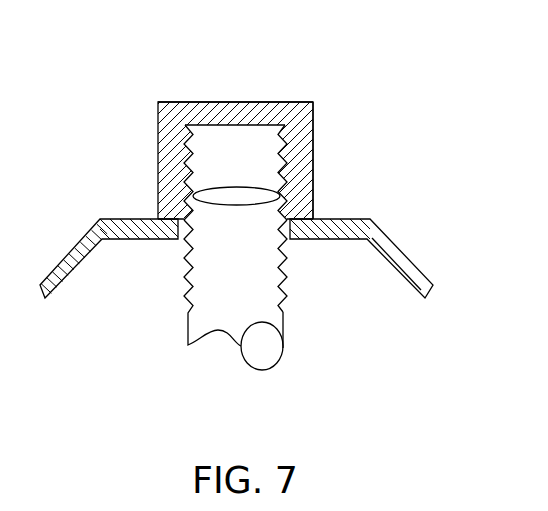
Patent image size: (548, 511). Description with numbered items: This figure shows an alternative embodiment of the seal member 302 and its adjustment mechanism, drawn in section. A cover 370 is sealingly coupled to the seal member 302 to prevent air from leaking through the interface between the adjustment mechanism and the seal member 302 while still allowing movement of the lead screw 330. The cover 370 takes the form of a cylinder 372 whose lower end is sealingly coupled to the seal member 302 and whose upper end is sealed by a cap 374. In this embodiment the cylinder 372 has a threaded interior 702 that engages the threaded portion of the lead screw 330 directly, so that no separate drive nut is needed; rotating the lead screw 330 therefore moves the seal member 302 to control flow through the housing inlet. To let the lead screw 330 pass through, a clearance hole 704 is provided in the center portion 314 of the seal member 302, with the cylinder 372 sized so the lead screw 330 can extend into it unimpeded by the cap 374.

The cover 370 is at (313, 190).
The cap 374 is at (257, 110).
The cylinder 372 is at (313, 132).
The threaded interior 702 is at (197, 152).
The lead screw 330 is at (251, 304).
The clearance hole 704 is at (289, 247).
The center portion 314 is at (128, 220).
The seal member 302 is at (392, 258).